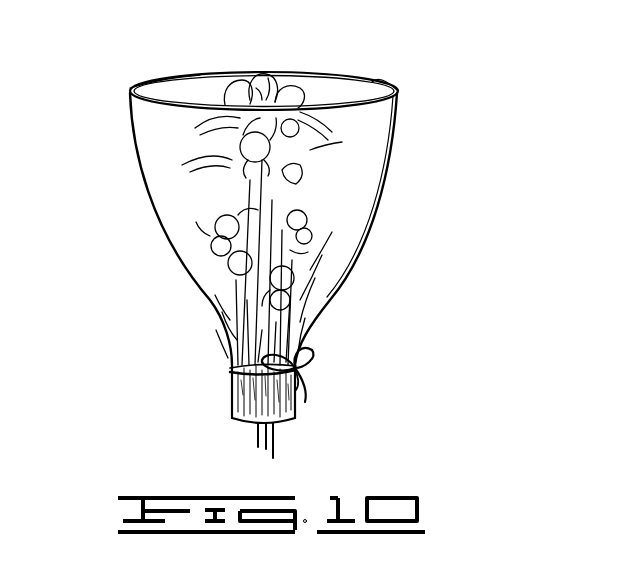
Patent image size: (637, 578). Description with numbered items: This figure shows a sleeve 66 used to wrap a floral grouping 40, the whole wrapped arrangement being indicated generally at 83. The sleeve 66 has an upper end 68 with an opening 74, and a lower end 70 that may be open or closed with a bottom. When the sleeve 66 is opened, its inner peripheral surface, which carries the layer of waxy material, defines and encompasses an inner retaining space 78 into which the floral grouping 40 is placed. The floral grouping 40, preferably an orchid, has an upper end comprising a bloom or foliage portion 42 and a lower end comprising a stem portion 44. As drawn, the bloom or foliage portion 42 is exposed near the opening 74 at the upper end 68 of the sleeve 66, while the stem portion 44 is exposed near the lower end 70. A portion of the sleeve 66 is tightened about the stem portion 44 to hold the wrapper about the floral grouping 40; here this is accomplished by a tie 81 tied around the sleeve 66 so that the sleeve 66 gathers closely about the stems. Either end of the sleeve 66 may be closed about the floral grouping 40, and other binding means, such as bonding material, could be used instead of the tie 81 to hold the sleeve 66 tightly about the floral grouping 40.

The floral arrangement assembly 83 is at (363, 43).
The inner retaining space 78 is at (168, 90).
The bloom or foliage portion 42 is at (257, 92).
The opening 74 is at (372, 82).
The upper end 68 is at (398, 90).
The floral grouping 40 is at (319, 197).
The sleeve 66 is at (380, 248).
The tie 81 is at (308, 364).
The lower end 70 is at (292, 428).
The stem portion 44 is at (258, 440).